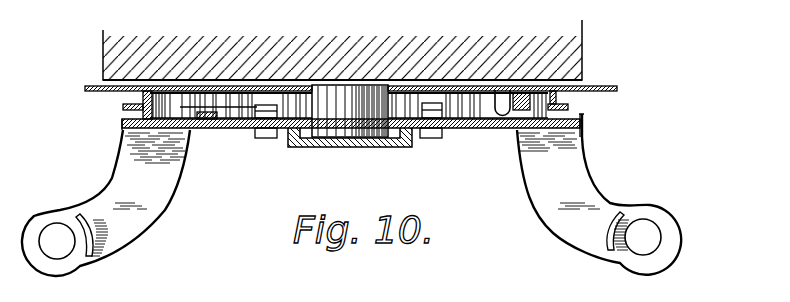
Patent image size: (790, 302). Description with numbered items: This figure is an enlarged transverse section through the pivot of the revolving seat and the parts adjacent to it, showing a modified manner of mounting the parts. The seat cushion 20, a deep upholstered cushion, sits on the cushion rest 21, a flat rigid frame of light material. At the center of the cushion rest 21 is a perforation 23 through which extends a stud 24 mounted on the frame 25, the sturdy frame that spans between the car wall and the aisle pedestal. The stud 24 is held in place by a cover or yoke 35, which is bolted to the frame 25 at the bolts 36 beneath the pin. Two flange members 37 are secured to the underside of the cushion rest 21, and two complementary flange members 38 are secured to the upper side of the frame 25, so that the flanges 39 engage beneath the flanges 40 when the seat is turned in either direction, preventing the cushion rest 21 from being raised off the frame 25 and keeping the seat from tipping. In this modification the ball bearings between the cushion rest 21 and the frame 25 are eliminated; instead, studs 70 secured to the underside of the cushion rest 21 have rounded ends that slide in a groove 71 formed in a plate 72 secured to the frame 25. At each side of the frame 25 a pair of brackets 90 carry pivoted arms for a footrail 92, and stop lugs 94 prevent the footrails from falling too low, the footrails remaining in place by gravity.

The seat cushion 20 is at (562, 52).
The cushion rest 21 is at (604, 86).
The perforation 23 is at (403, 88).
The stud 24 is at (337, 96).
The frame 25 is at (587, 136).
The cover or yoke 35 is at (359, 147).
The bolts 36 is at (273, 147).
The flange members 37 is at (163, 130).
The complementary flange members 38 is at (118, 121).
The flanges 39 is at (137, 130).
The flanges 40 is at (142, 102).
The studs 70 is at (204, 130).
The groove 71 is at (199, 130).
The plate 72 is at (218, 127).
The brackets 90 is at (106, 203).
The footrail 92 is at (600, 198).
The stop lugs 94 is at (100, 248).